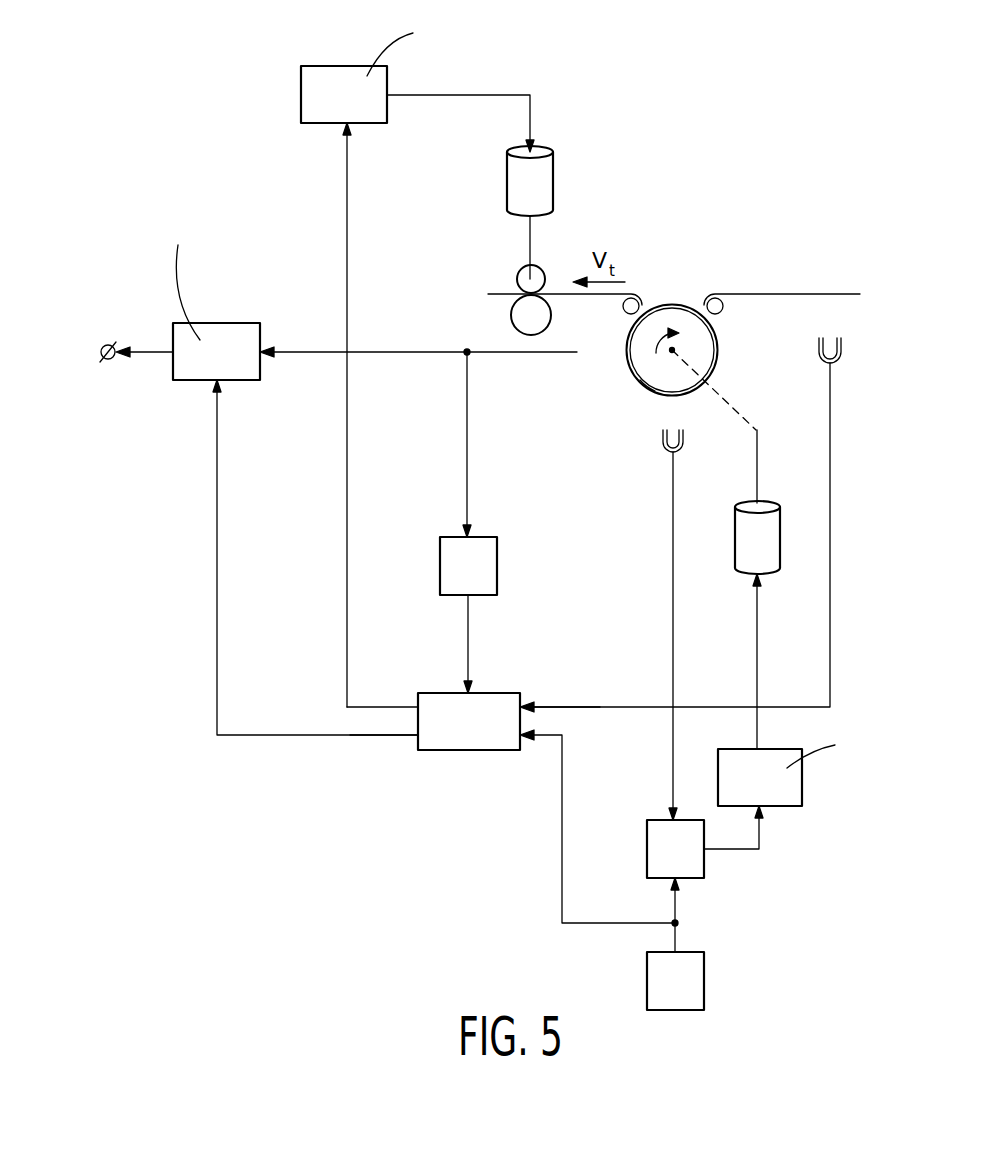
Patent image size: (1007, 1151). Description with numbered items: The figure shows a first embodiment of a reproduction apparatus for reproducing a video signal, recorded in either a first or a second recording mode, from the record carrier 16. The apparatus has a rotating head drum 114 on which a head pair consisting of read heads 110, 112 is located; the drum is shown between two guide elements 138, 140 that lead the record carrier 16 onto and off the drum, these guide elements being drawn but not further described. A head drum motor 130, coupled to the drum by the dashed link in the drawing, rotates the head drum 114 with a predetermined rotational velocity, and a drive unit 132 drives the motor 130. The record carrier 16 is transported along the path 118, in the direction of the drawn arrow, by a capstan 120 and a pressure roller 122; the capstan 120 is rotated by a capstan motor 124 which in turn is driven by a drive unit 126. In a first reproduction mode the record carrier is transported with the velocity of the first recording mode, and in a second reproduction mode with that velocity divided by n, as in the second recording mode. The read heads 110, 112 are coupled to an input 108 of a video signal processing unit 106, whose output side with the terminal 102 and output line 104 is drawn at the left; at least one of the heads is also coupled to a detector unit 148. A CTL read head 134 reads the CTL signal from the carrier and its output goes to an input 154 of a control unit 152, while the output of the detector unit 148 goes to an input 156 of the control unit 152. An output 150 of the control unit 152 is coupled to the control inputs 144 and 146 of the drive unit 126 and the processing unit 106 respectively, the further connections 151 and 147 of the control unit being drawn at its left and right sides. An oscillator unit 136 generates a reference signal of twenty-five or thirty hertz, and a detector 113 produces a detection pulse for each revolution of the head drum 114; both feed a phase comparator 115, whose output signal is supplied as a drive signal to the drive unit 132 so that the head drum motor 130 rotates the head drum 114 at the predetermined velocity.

The record carrier 16 is at (777, 290).
The video signal output terminal 102 is at (105, 340).
The output line 104 is at (170, 357).
The video signal processing unit 106 is at (213, 318).
The input of the video signal processing unit 108 is at (264, 349).
The read head 110 is at (637, 373).
The read head 112 is at (652, 385).
The detector 113 is at (662, 441).
The rotating head drum 114 is at (672, 310).
The phase comparator 115 is at (645, 848).
The web feed path 118 is at (368, 290).
The capstan 120 is at (518, 277).
The pressure roller 122 is at (512, 314).
The capstan motor 124 is at (553, 182).
The drive unit 126 is at (336, 62).
The head drum motor 130 is at (735, 530).
The drive unit 132 is at (792, 808).
The CTL read head 134 is at (846, 352).
The oscillator unit 136 is at (645, 984).
The guide roller 138 is at (622, 316).
The guide roller 140 is at (723, 314).
The control input of the drive unit 144 is at (340, 127).
The control input of the processing unit 146 is at (210, 384).
The oscillator input line 147 is at (522, 742).
The detector unit 148 is at (438, 570).
The output of the control unit 150 is at (417, 705).
The control unit output 151 is at (416, 740).
The control unit 152 is at (446, 752).
The input of the control unit 154 is at (522, 702).
The input of the control unit 156 is at (462, 692).